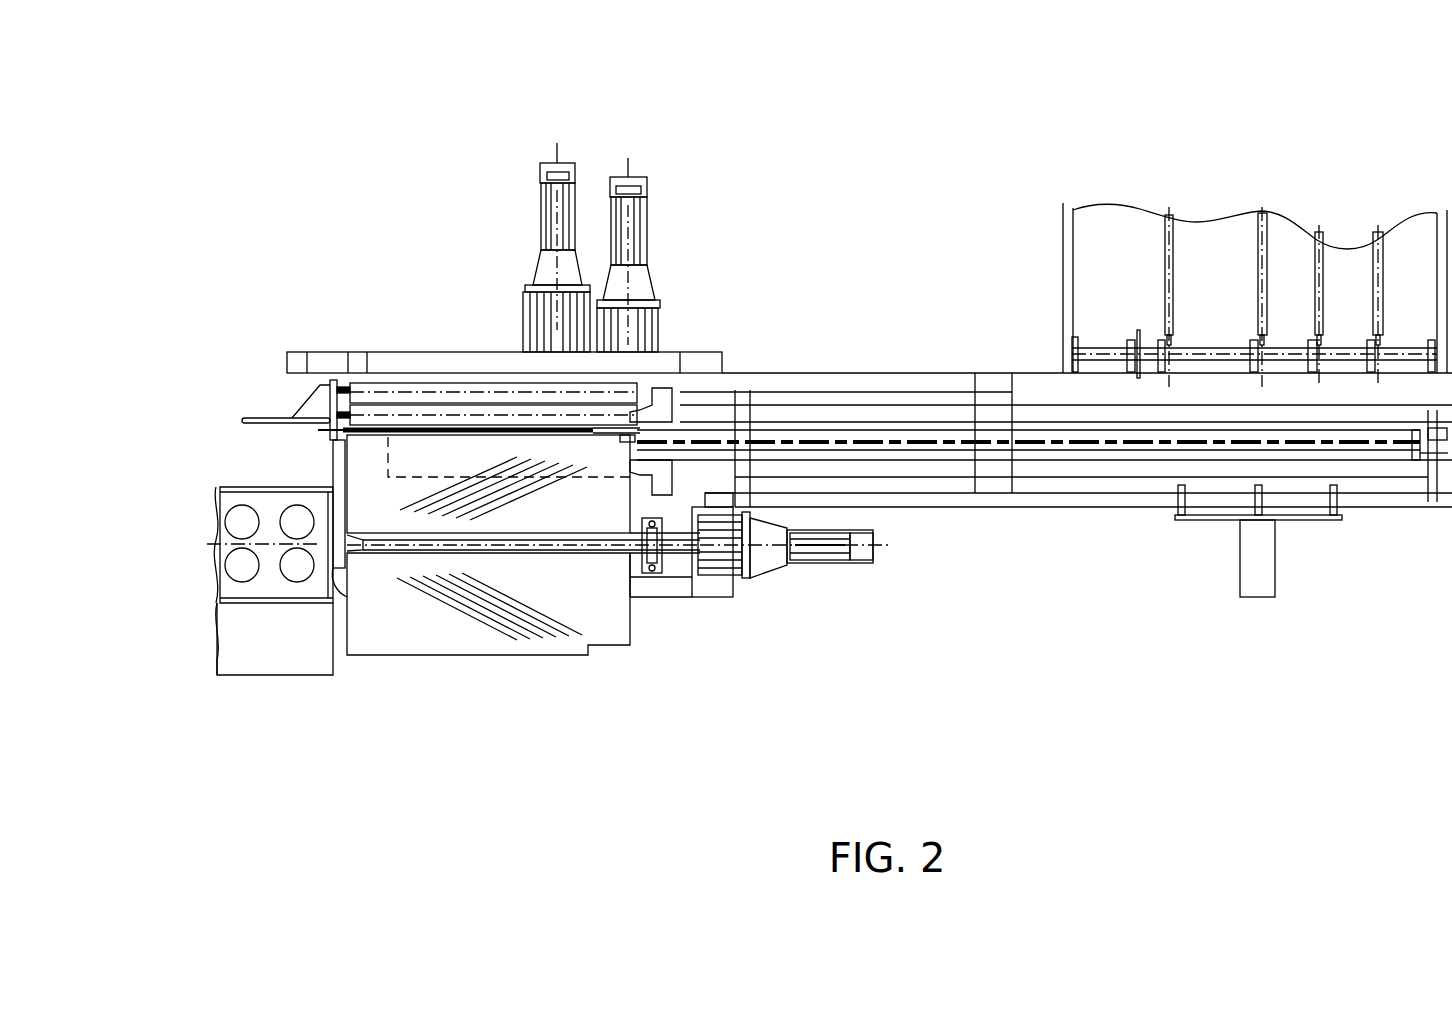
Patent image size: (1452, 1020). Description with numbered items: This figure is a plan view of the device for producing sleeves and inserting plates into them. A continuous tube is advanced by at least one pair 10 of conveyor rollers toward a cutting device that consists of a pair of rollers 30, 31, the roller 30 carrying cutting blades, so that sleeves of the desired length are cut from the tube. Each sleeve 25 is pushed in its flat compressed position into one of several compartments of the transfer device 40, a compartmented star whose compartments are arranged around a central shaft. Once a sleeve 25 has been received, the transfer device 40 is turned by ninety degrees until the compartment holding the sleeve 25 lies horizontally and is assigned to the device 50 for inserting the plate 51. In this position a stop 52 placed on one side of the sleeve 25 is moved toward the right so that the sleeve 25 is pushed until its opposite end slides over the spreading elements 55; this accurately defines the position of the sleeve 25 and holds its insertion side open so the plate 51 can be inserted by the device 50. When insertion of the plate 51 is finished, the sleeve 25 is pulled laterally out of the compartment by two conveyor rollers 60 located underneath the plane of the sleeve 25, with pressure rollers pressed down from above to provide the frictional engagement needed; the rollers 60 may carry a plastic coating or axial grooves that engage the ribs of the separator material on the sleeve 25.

The pair of conveyor rollers 10 is at (238, 567).
The sleeve 25 is at (467, 463).
The roller 30 is at (300, 515).
The roller 31 is at (297, 570).
The transfer device 40 is at (395, 603).
The device for inserting the plate 50 is at (932, 525).
The plate 51 is at (1213, 268).
The stop 52 is at (238, 463).
The spreading elements 55 is at (660, 410).
The conveyor rollers 60 is at (415, 422).